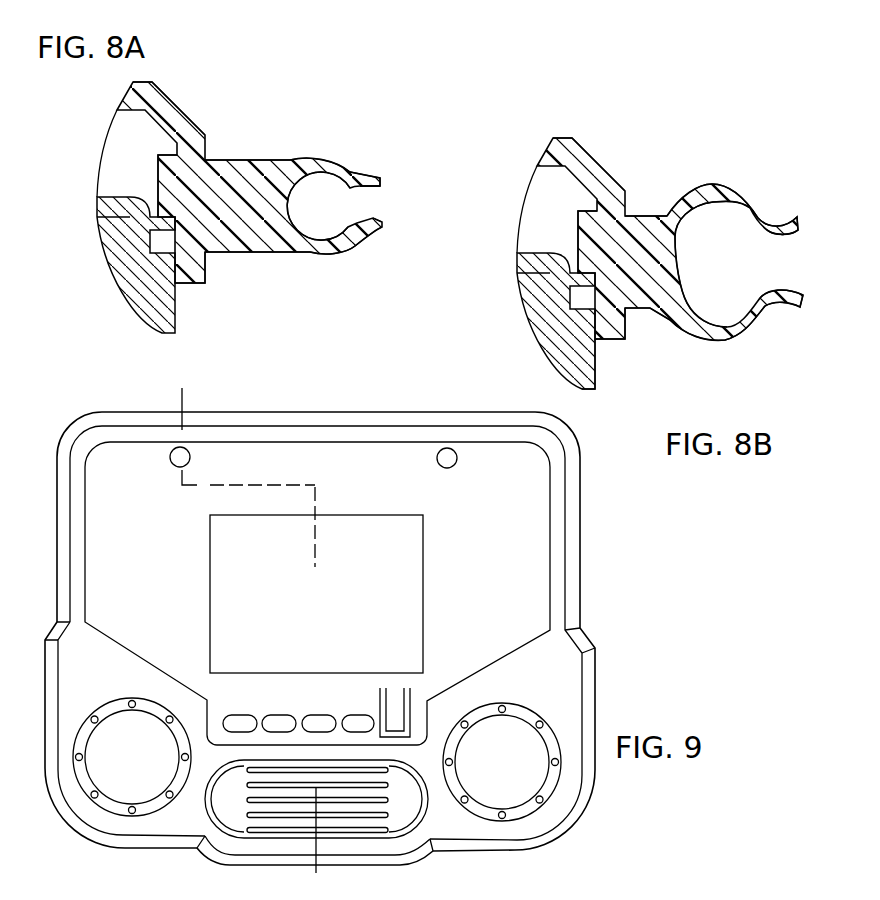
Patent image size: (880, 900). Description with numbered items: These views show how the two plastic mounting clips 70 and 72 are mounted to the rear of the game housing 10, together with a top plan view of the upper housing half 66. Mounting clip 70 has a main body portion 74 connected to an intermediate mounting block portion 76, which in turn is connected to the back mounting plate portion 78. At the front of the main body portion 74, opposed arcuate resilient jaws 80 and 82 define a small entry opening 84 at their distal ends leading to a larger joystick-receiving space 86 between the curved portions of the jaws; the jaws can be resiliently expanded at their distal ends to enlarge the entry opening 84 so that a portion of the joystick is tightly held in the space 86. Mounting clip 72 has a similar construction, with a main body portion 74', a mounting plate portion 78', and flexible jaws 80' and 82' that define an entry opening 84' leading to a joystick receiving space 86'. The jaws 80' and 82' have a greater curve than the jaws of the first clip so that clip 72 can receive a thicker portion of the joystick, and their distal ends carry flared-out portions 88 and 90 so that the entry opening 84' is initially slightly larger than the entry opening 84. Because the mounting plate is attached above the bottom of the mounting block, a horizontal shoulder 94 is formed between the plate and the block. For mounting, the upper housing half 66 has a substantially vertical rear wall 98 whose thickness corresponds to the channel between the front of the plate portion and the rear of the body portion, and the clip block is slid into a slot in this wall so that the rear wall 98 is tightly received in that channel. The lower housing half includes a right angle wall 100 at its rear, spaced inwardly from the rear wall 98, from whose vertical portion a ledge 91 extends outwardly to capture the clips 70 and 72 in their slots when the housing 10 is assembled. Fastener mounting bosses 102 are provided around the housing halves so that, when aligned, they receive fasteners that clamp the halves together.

In FIG. 9, the game housing 10 is at (190, 388).
In FIG. 9, the first housing half 66 is at (597, 632).
In FIG. 8A, the mounting clip 70 is at (283, 145).
In FIG. 8B, the mounting clip 72 is at (678, 187).
In FIG. 8A, the main body portion 74 is at (261, 281).
In FIG. 8B, the main body portion 74' is at (661, 340).
In FIG. 8A, the mounting block portion 76 is at (190, 203).
In FIG. 8B, the mounting block portion 76 is at (625, 243).
In FIG. 8A, the mounting plate portion 78 is at (116, 165).
In FIG. 8B, the mounting plate portion 78' is at (528, 228).
In FIG. 8A, the jaw 80 is at (318, 160).
In FIG. 8B, the jaw 80' is at (720, 229).
In FIG. 8A, the jaw 82 is at (368, 262).
In FIG. 8B, the jaw 82' is at (708, 357).
In FIG. 8A, the entry opening 84 is at (403, 185).
In FIG. 8B, the entry opening 84' is at (806, 243).
In FIG. 8A, the joystick-receiving space 86 is at (341, 159).
In FIG. 8B, the joystick receiving space 86' is at (740, 185).
In FIG. 8B, the flared-out portion 88 is at (775, 220).
In FIG. 8B, the flared-out portion 90 is at (785, 310).
In FIG. 8A, the ledge 91 is at (193, 283).
In FIG. 8B, the ledge 91 is at (610, 343).
In FIG. 8B, the horizontal shoulder 94 is at (573, 347).
In FIG. 8A, the vertical rear wall 98 is at (205, 145).
In FIG. 8B, the vertical rear wall 98 is at (627, 197).
In FIG. 8A, the right angle wall 100 is at (120, 247).
In FIG. 8B, the right angle wall 100 is at (540, 297).
In FIG. 9, the fastener mounting bosses 102 is at (178, 465).